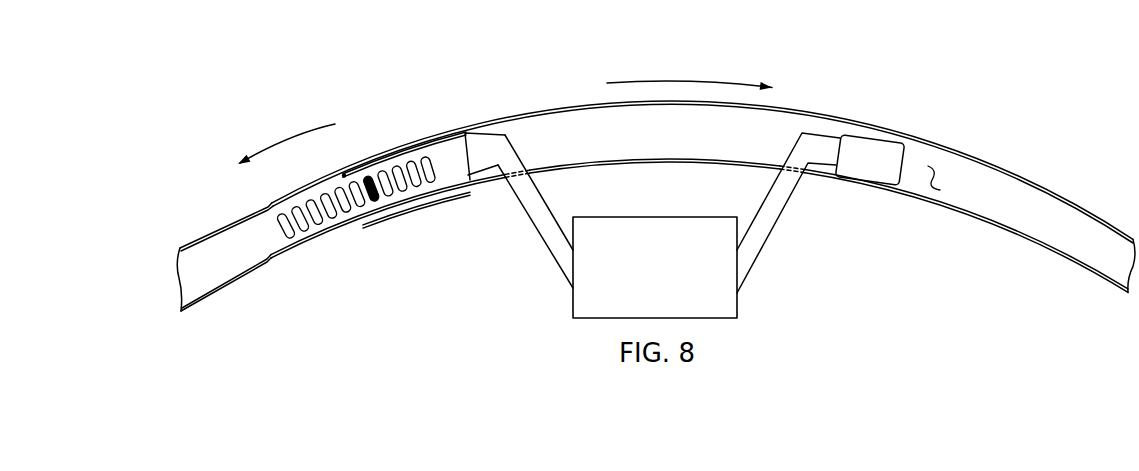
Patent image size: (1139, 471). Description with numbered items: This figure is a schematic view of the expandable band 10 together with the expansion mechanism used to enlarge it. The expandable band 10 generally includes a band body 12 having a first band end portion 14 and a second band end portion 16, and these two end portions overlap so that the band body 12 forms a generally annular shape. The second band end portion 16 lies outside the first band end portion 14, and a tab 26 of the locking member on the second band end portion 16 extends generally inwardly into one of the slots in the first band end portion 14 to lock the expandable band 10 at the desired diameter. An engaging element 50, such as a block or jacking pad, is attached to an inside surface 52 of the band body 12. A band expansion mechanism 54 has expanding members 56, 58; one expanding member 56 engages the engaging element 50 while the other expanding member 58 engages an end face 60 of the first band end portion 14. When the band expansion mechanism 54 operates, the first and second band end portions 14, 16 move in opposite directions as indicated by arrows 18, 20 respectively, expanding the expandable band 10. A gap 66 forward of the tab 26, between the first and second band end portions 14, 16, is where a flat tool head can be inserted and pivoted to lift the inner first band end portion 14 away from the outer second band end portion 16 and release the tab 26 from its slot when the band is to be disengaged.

The expandable band 10 is at (512, 100).
The band body 12 is at (1050, 191).
The first band end portion 14 is at (331, 233).
The second band end portion 16 is at (372, 166).
The arrow 18 is at (282, 142).
The arrow 20 is at (696, 78).
The tab 26 is at (372, 176).
The engaging element 50 is at (905, 152).
The inside surface 52 is at (940, 190).
The band expansion mechanism 54 is at (667, 279).
The expanding member 56 is at (773, 231).
The expanding member 58 is at (533, 232).
The end face 60 is at (474, 181).
The gap 66 is at (368, 228).